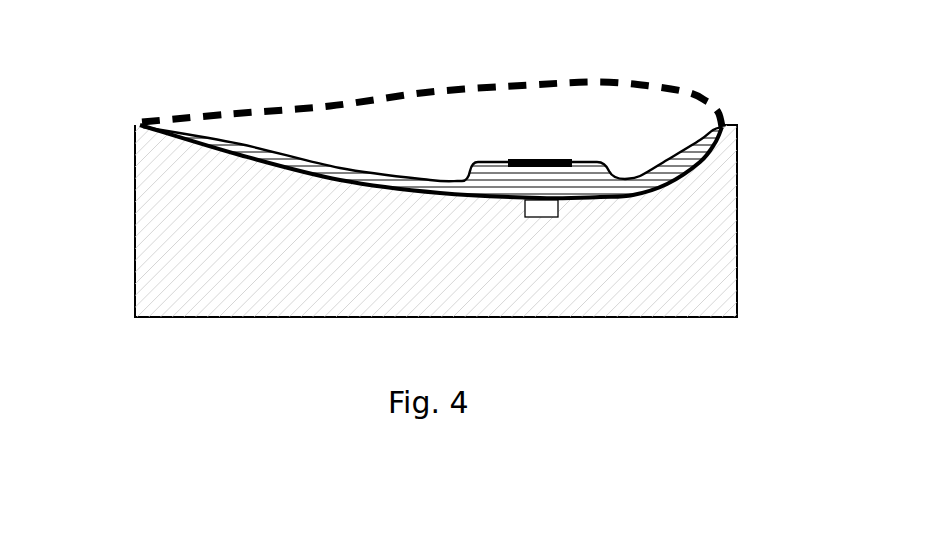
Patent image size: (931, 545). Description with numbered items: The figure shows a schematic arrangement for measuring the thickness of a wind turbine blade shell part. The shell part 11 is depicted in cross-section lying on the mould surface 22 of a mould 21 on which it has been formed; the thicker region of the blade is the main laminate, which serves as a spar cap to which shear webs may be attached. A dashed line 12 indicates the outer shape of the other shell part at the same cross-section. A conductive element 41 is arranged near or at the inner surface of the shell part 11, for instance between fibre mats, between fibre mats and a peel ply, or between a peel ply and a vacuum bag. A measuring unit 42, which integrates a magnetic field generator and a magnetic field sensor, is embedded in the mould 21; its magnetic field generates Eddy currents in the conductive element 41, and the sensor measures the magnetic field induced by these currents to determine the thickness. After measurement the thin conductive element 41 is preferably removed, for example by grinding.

The shell part 11 is at (600, 163).
The dashed line 12 is at (330, 103).
The mould 21 is at (723, 267).
The mould surface 22 is at (190, 143).
The conductive element 41 is at (523, 160).
The measuring unit 42 is at (547, 211).